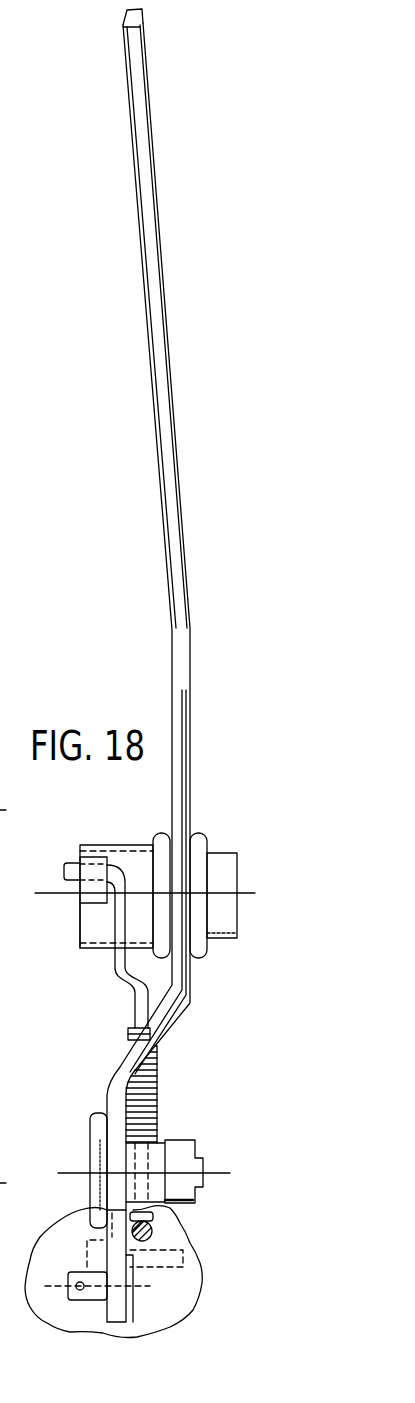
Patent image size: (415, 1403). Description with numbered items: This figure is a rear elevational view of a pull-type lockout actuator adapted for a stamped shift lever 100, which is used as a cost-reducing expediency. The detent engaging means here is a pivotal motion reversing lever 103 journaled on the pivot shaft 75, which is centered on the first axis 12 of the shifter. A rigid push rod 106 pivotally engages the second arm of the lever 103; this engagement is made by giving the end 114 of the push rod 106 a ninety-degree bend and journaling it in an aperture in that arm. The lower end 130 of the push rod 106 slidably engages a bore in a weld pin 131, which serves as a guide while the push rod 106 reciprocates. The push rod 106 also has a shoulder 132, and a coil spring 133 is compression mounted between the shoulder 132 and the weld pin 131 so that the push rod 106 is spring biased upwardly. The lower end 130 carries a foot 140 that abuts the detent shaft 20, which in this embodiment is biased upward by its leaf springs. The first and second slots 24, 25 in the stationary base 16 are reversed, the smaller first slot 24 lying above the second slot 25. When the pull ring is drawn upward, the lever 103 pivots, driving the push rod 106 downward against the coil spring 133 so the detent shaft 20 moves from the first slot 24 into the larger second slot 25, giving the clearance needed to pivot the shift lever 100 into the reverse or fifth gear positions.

The stamped shift lever 100 is at (161, 322).
The pivotal motion reversing lever 103 is at (134, 856).
The end of push rod 114 is at (74, 858).
The pivot shaft 75 is at (228, 856).
The first axis 12 is at (63, 902).
The rigid push rod 106 is at (112, 980).
The shoulder 132 is at (128, 1032).
The coil spring 133 is at (163, 1072).
The lower end of push rod 130 is at (148, 1167).
The weld pin 131 is at (92, 1192).
The foot 140 is at (168, 1214).
The first slot 24 is at (155, 1225).
The detent shaft 20 is at (152, 1235).
The second slot 25 is at (168, 1262).
The stationary base 16 is at (56, 1313).